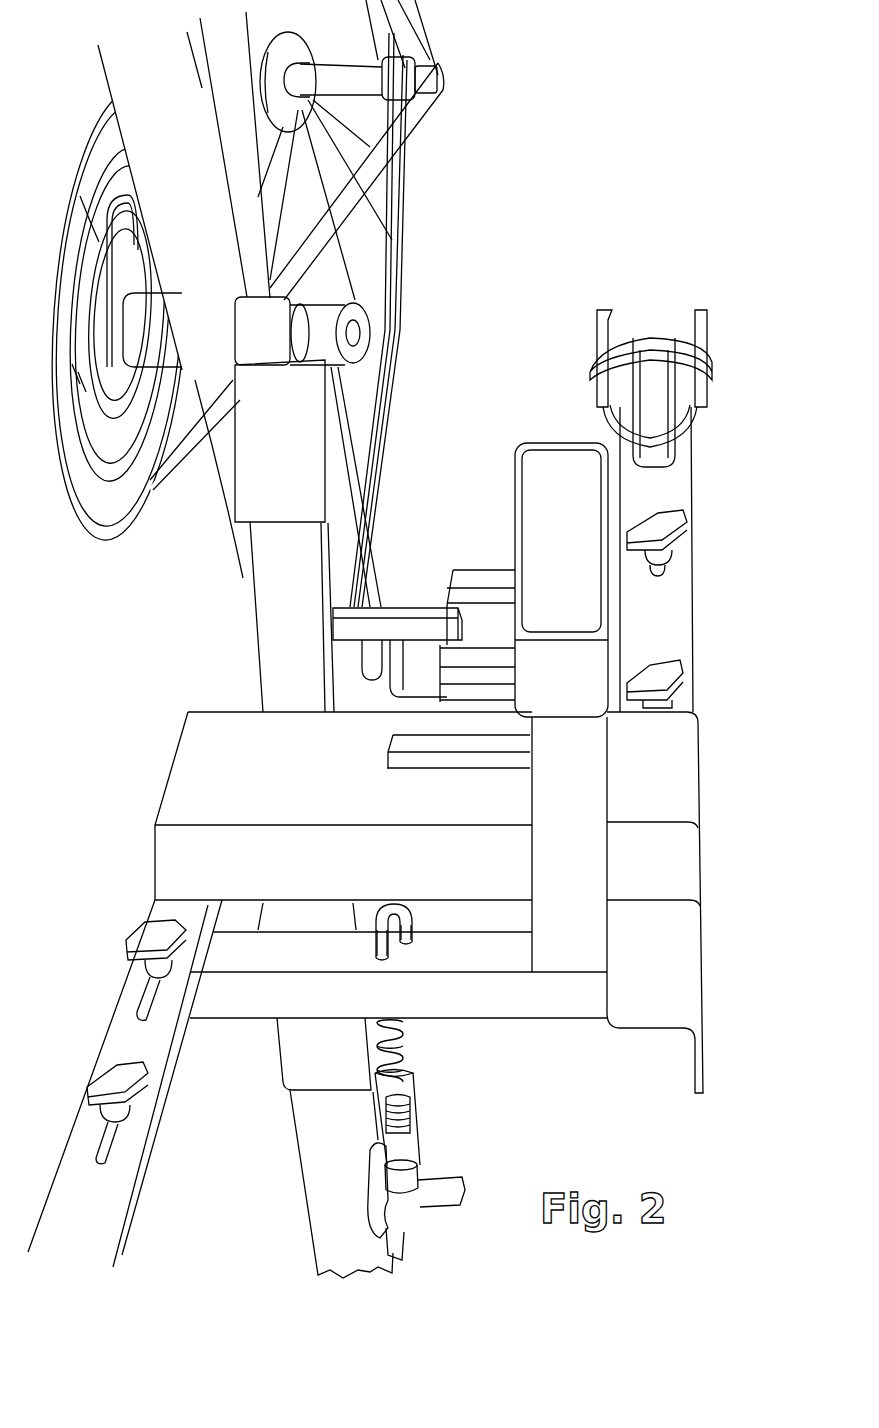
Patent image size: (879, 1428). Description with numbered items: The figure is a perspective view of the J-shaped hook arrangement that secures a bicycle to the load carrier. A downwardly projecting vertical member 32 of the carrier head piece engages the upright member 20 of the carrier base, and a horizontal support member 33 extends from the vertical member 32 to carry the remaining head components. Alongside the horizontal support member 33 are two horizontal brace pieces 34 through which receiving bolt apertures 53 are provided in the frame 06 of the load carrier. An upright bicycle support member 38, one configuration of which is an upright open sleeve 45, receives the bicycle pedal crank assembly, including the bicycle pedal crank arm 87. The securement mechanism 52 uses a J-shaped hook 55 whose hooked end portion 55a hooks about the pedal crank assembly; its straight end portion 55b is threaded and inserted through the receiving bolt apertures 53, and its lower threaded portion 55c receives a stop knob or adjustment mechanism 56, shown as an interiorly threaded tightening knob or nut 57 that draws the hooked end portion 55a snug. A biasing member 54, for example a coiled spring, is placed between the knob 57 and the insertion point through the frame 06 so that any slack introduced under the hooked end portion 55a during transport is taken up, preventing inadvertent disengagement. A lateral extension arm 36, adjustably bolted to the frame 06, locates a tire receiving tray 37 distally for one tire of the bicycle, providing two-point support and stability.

The frame 06 is at (157, 745).
The upright member 20 is at (322, 1165).
The vertical member 32 is at (302, 1065).
The horizontal support member 33 is at (267, 780).
The horizontal brace pieces 34 is at (442, 1007).
The lateral extension arm 36 is at (702, 556).
The tire receiving tray 37 is at (648, 318).
The bicycle support member 38 is at (264, 453).
The upright open sleeve 45 is at (277, 628).
The securement mechanism 52 is at (495, 1140).
The receiving bolt apertures 53 is at (375, 952).
The biasing member 54 is at (402, 1043).
The J-shaped hook 55 is at (390, 703).
The hooked end portion 55a is at (415, 930).
The straight end portion 55b is at (421, 1063).
The lower threaded portion 55c is at (413, 1127).
The stop knob or adjustment mechanism 56 is at (455, 1162).
The tightening knob or nut 57 is at (417, 1207).
The bicycle pedal crank arm 87 is at (372, 573).